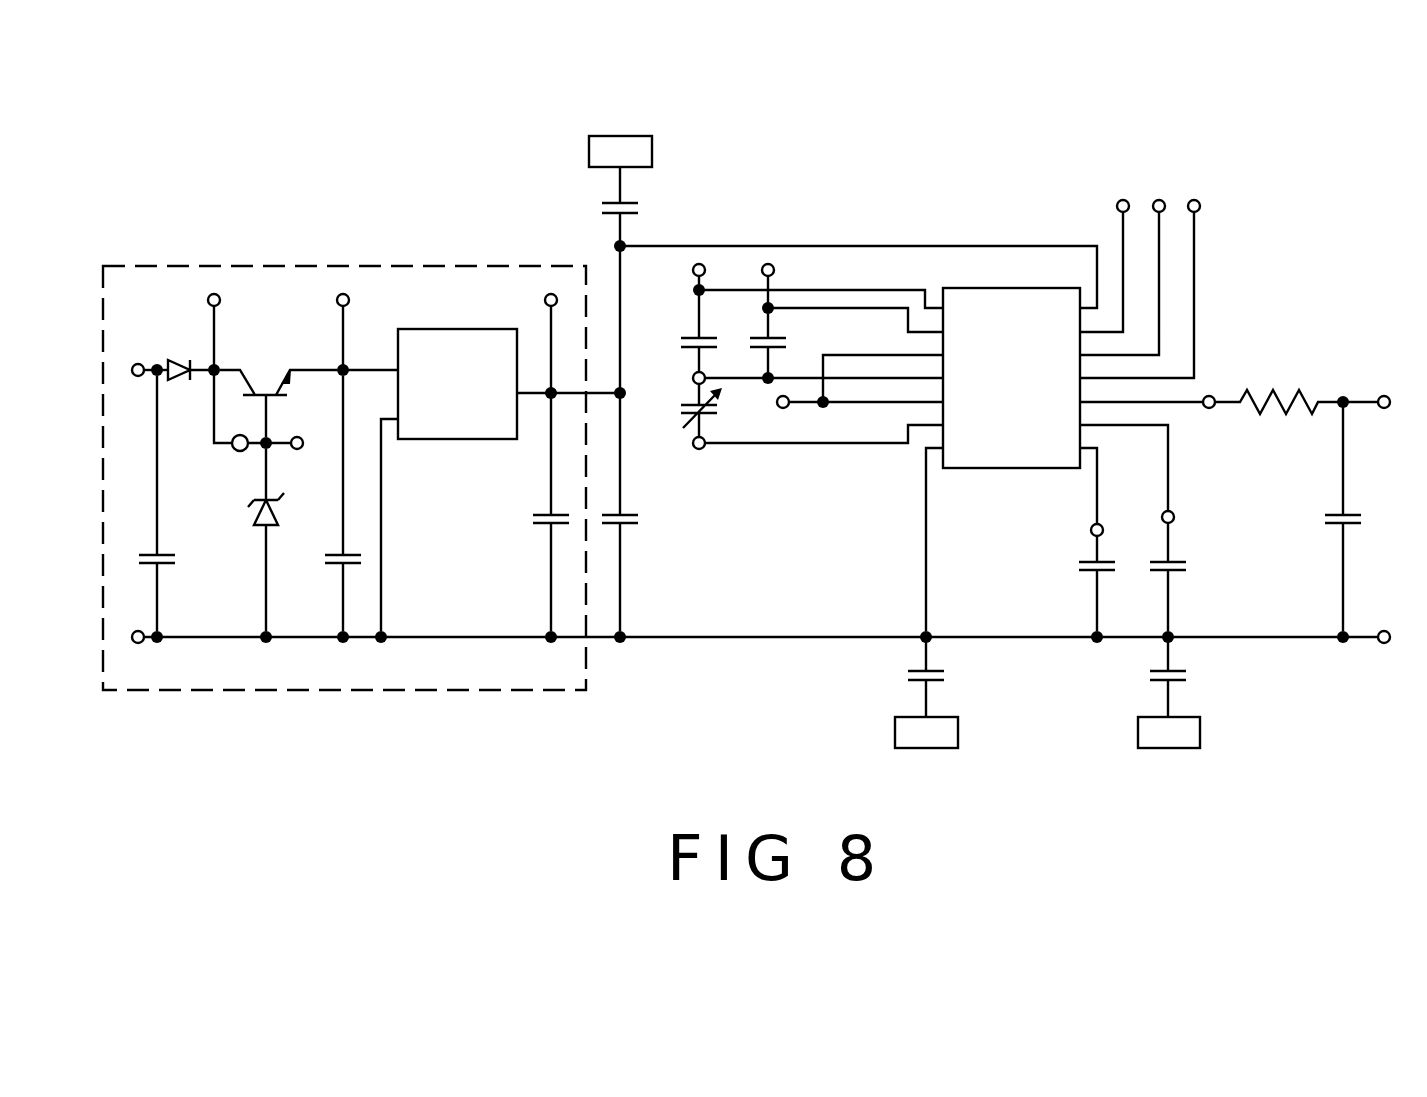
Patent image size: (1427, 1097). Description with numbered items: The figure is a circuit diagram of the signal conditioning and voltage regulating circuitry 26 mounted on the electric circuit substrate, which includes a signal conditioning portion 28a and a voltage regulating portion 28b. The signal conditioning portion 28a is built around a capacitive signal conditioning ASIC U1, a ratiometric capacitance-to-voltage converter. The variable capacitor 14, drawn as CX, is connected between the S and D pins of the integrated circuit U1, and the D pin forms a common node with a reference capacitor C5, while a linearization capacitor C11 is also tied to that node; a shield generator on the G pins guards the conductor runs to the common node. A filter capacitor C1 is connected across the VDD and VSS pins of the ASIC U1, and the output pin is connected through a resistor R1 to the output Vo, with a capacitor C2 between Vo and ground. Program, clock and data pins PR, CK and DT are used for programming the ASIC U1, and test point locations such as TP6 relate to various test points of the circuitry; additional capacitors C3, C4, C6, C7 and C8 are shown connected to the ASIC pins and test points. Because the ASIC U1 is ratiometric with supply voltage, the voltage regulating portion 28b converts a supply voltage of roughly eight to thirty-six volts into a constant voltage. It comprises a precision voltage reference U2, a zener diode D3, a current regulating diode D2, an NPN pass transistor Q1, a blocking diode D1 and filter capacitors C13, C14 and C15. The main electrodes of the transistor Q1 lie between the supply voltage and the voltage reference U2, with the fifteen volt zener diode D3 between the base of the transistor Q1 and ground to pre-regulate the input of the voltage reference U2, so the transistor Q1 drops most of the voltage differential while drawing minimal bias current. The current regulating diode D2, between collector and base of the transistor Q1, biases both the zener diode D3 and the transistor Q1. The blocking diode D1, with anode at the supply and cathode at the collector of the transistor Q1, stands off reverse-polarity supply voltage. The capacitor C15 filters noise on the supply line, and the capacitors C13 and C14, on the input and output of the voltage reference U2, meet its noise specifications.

The circuitry 26 is at (764, 135).
The signal conditioning portion 28a is at (868, 235).
The voltage regulating portion 28b is at (280, 258).
The variable capacitor 14 is at (714, 415).
The capacitive signal conditioning ASIC U1 is at (1011, 378).
The precision voltage reference U2 is at (500, 480).
The NPN pass transistor Q1 is at (278, 390).
The blocking diode D1 is at (191, 356).
The current regulating diode D2 is at (259, 430).
The zener diode D3 is at (253, 540).
The resistor R1 is at (1296, 388).
The variable capacitor CX is at (683, 410).
The filter capacitor C1 is at (634, 438).
The capacitor C2 is at (1362, 516).
The capacitor C3 is at (1187, 577).
The capacitor C4 is at (1076, 583).
The reference capacitor C5 is at (785, 343).
The capacitor C6 is at (1145, 677).
The capacitor C7 is at (900, 677).
The capacitor C8 is at (595, 206).
The linearization capacitor C11 is at (685, 331).
The filter capacitor C13 is at (325, 503).
The filter capacitor C14 is at (530, 468).
The filter capacitor C15 is at (172, 503).
The test point TP6 is at (620, 151).